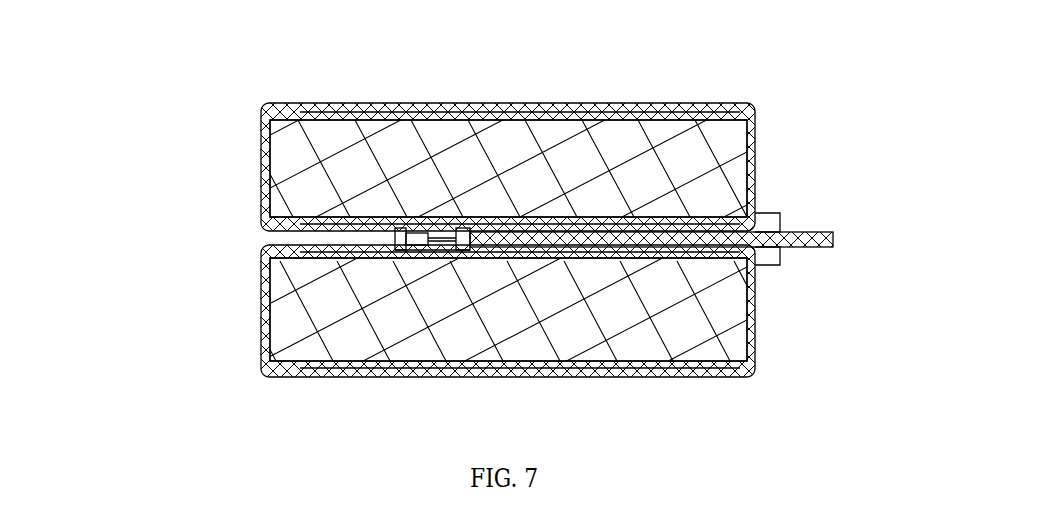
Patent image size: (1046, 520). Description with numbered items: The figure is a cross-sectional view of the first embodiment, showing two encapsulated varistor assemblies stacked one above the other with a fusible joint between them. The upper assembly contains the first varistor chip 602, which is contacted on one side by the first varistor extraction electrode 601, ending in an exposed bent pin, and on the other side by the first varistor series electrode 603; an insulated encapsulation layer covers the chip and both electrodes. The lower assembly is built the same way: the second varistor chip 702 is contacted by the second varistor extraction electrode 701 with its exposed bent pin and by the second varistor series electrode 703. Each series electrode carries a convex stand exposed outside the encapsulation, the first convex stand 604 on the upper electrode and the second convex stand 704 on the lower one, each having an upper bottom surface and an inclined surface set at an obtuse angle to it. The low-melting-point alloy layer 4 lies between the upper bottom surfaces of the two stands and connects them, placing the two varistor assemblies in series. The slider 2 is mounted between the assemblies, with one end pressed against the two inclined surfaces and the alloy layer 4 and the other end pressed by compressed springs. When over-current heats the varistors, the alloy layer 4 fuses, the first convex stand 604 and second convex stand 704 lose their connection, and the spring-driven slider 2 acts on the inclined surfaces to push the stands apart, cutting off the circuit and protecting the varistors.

The first varistor extraction electrode 601 is at (272, 104).
The first varistor chip 602 is at (697, 157).
The first varistor series electrode 603 is at (270, 196).
The first convex stand 604 is at (470, 230).
The slider 2 is at (930, 208).
The low-melting-point alloy layer 4 is at (395, 238).
The second varistor extraction electrode 701 is at (262, 372).
The second varistor chip 702 is at (706, 296).
The second varistor series electrode 703 is at (397, 250).
The second convex stand 704 is at (472, 248).